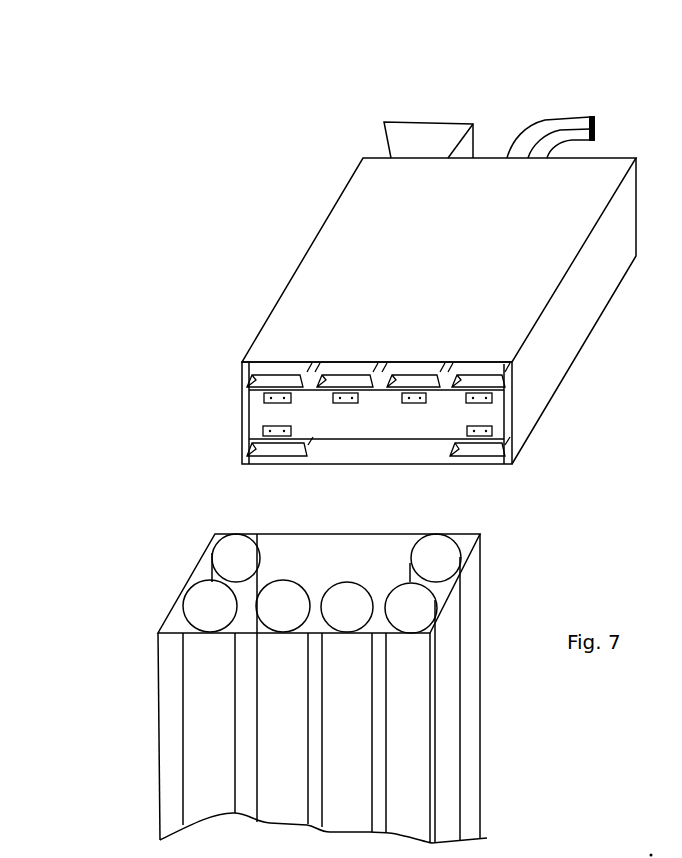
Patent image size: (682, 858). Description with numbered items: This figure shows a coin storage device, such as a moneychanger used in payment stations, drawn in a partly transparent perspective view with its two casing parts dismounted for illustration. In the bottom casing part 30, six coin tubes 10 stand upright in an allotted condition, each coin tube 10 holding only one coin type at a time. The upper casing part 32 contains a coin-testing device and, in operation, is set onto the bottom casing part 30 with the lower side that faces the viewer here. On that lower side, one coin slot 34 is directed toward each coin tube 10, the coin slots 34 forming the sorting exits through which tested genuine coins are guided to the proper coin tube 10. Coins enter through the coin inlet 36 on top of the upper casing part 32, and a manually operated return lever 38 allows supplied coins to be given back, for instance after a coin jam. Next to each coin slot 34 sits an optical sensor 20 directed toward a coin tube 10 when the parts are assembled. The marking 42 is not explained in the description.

The coin tube 10 is at (200, 610).
The optical sensor 20 is at (280, 403).
The bottom casing part 30 is at (158, 740).
The upper casing part 32 is at (380, 214).
The coin slot 34 is at (268, 382).
The coin inlet 36 is at (435, 135).
The return lever 38 is at (555, 128).
The reference mark 42 is at (650, 843).